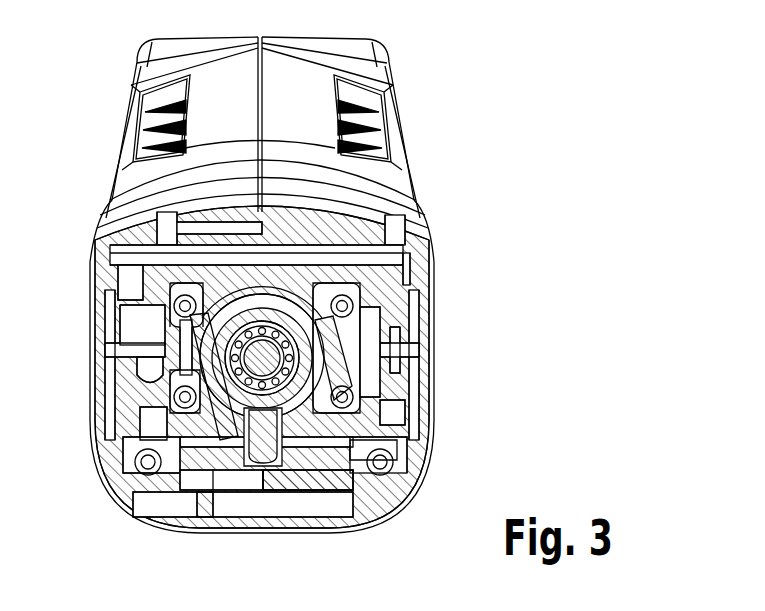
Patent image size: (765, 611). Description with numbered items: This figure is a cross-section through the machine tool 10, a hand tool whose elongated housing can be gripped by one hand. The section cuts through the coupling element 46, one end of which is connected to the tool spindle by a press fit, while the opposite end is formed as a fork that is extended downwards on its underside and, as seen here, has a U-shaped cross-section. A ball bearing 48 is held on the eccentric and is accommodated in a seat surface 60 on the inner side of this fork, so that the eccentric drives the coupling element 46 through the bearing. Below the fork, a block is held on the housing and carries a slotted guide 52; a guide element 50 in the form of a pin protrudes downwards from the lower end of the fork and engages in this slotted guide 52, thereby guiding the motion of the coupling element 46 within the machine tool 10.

The machine tool 10 is at (462, 107).
The coupling element 46 is at (435, 347).
The ball bearing 48 is at (433, 304).
The guide element 50 is at (262, 468).
The slotted guide 52 is at (296, 478).
The seat surface 60 is at (437, 376).